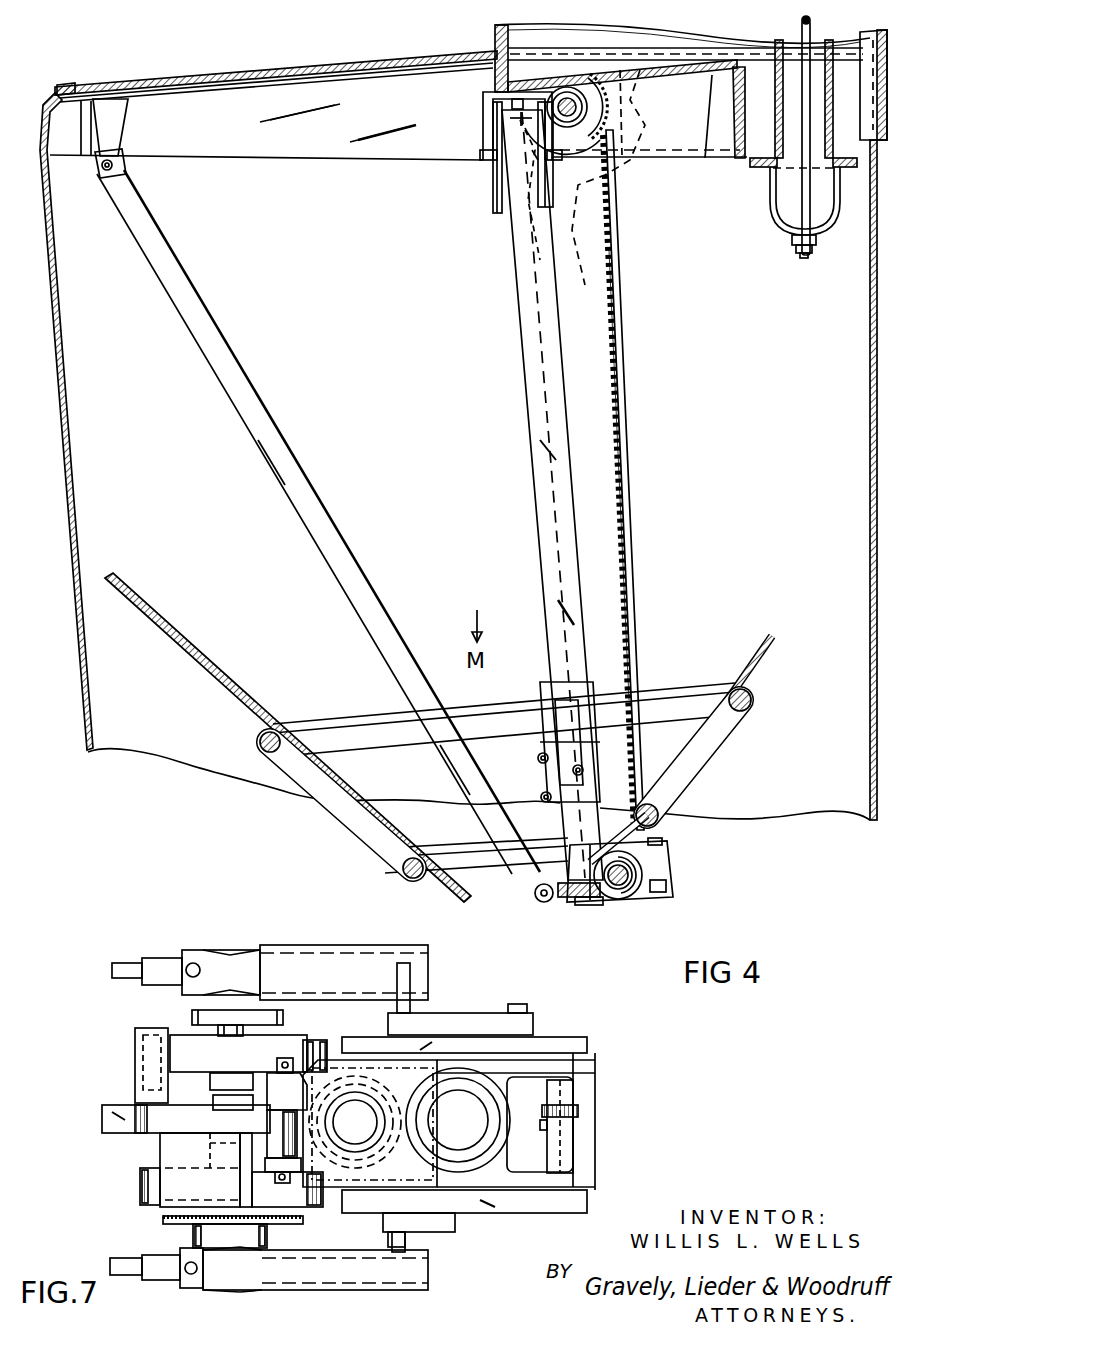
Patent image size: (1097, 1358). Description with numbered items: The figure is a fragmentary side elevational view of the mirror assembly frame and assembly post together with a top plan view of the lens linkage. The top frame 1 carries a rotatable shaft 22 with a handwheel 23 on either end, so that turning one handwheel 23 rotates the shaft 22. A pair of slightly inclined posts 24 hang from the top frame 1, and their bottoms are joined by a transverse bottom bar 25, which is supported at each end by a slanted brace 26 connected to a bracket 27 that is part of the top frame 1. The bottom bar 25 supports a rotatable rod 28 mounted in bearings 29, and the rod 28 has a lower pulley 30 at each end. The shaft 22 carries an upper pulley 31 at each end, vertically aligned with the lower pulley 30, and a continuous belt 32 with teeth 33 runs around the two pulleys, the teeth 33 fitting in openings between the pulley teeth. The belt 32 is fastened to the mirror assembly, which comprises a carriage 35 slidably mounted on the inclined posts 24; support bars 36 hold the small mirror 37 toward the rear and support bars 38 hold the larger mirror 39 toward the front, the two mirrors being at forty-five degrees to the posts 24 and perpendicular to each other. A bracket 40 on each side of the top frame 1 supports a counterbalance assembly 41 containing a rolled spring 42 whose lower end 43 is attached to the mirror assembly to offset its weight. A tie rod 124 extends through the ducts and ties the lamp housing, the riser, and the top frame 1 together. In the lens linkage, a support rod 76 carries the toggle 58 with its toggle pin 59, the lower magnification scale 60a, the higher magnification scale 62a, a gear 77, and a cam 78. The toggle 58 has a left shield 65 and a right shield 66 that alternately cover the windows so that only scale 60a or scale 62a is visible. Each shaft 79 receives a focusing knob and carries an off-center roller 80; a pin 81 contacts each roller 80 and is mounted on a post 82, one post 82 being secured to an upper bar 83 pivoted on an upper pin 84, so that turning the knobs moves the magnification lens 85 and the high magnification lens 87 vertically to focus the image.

In FIG. 4, the top frame 1 is at (50, 95).
In FIG. 4, the rotatable shaft 22 is at (600, 146).
In FIG. 4, the handwheel 23 is at (582, 177).
In FIG. 4, the post 24 is at (565, 482).
In FIG. 4, the bottom bar 25 is at (556, 905).
In FIG. 4, the slanted brace 26 is at (305, 478).
In FIG. 4, the bracket 27 is at (120, 135).
In FIG. 4, the rotatable rod 28 is at (628, 893).
In FIG. 4, the bearing 29 is at (613, 890).
In FIG. 4, the lower pulley 30 is at (672, 898).
In FIG. 4, the upper pulley 31 is at (582, 118).
In FIG. 4, the continuous belt 32 is at (620, 340).
In FIG. 4, the teeth 33 is at (608, 383).
In FIG. 4, the carriage 35 is at (382, 700).
In FIG. 4, the support bar 36 is at (755, 705).
In FIG. 4, the small mirror 37 is at (755, 660).
In FIG. 4, the support bar 38 is at (260, 747).
In FIG. 4, the larger mirror 39 is at (210, 667).
In FIG. 4, the bracket 40 is at (483, 97).
In FIG. 4, the counterbalance assembly 41 is at (515, 188).
In FIG. 4, the rolled spring 42 is at (548, 558).
In FIG. 4, the lower end of the rolled spring 43 is at (583, 770).
In FIG. 4, the tie rod 124 is at (787, 205).
In FIG. 7, the toggle 58 is at (152, 1127).
In FIG. 7, the toggle pin 59 is at (105, 1122).
In FIG. 7, the lower magnification scale 60a is at (325, 1030).
In FIG. 7, the higher magnification scale 62a is at (140, 1197).
In FIG. 7, the left shield 65 is at (142, 1085).
In FIG. 7, the right shield 66 is at (168, 1195).
In FIG. 7, the support rod 76 is at (235, 1033).
In FIG. 7, the gear 77 is at (303, 1222).
In FIG. 7, the cam 78 is at (195, 1017).
In FIG. 7, the shaft 79 is at (130, 960).
In FIG. 7, the roller 80 is at (345, 932).
In FIG. 7, the pin 81 is at (412, 982).
In FIG. 7, the post 82 is at (530, 1020).
In FIG. 7, the upper bar 83 is at (458, 1045).
In FIG. 7, the upper pin 84 is at (578, 1142).
In FIG. 7, the magnification lens 85 is at (500, 1121).
In FIG. 7, the high magnification lens 87 is at (370, 1123).